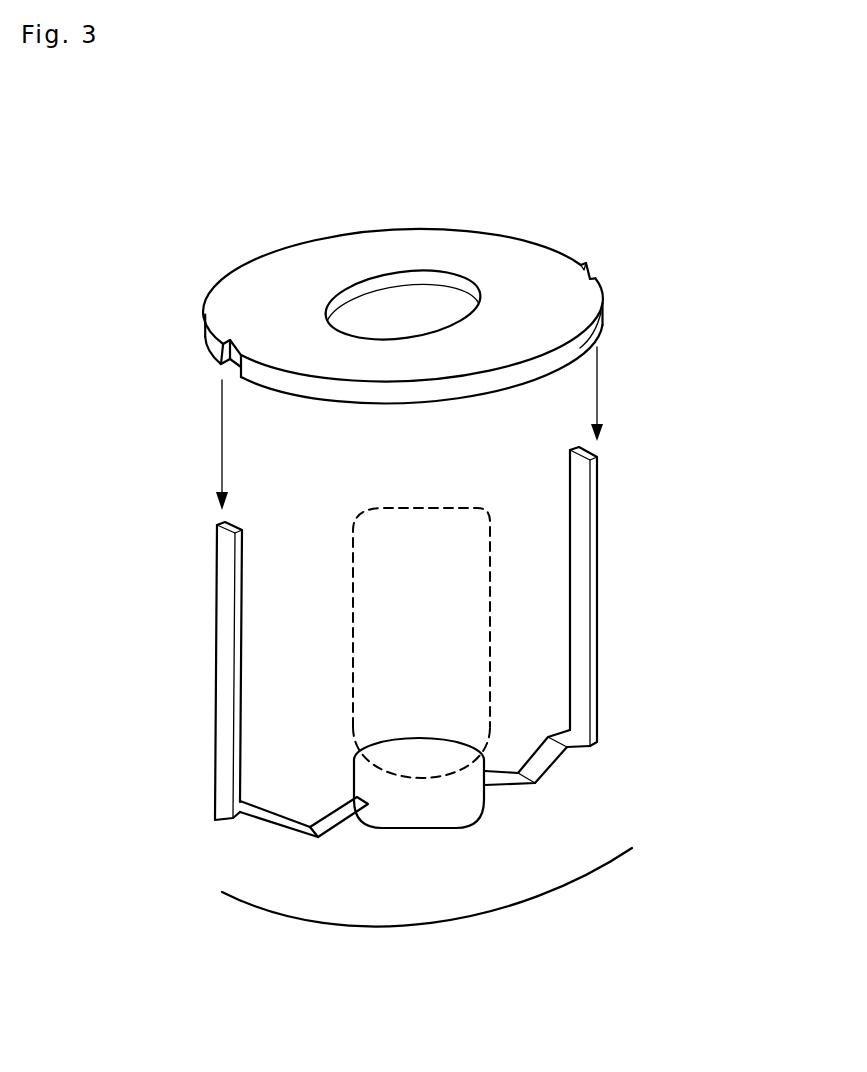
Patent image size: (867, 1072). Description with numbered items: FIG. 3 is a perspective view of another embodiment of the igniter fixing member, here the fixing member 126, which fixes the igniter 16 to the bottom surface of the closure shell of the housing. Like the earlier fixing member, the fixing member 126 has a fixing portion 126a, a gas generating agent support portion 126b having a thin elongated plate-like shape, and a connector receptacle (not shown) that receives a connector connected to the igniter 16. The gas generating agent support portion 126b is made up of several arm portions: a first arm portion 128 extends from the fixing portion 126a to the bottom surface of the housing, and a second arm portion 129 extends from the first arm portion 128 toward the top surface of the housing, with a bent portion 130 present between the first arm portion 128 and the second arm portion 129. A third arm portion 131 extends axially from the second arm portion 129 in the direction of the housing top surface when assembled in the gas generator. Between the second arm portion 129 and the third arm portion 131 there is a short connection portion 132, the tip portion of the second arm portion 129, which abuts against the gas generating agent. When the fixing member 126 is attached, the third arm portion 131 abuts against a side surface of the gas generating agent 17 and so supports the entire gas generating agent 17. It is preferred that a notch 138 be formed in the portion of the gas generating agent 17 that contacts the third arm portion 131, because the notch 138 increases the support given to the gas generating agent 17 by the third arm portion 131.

The gas generating agent 17 is at (477, 253).
The notch 138 is at (590, 274).
The igniter 16 is at (413, 541).
The third arm portion 131 is at (595, 595).
The gas generating agent support portion 126b is at (614, 616).
The fixing portion 126a is at (473, 798).
The fixing member 126 is at (469, 675).
The first arm portion 128 is at (342, 822).
The second arm portion 129 is at (282, 822).
The bent portion 130 is at (316, 838).
The connection portion 132 is at (252, 815).